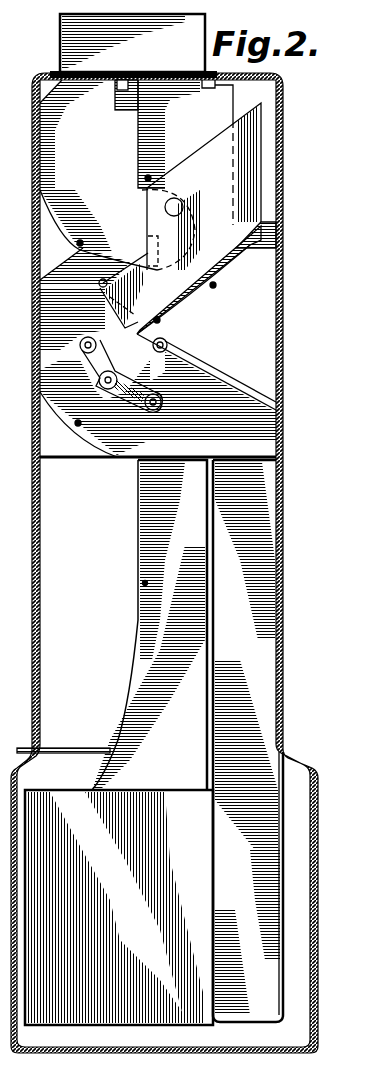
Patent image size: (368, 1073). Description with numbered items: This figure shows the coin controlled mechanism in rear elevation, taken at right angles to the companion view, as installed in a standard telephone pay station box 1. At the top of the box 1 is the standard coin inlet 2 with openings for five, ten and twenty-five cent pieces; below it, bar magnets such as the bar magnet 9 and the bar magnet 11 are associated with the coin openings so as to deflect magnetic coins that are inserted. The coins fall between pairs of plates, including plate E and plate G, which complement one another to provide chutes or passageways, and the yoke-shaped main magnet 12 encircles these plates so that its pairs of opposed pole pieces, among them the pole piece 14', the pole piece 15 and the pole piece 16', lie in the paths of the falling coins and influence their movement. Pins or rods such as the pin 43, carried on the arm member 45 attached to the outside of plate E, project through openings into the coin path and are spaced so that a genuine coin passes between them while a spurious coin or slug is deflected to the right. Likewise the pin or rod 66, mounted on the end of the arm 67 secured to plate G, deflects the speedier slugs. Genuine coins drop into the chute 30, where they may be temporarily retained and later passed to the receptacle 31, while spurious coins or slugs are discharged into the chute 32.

The telephone pay station box 1 is at (283, 393).
The coin inlet 2 is at (60, 45).
The bar magnet 9 is at (209, 88).
The bar magnet 11 is at (118, 90).
The main magnet 12 is at (250, 250).
The pole piece 14' is at (152, 230).
The pole piece 15 is at (147, 244).
The pole piece 16' is at (109, 290).
The chute 30 is at (145, 583).
The receptacle 31 is at (119, 907).
The chute 32 is at (248, 741).
The pin or rod 43 is at (168, 349).
The arm member 45 is at (198, 387).
The pin or rod 66 is at (80, 348).
The arm 67 is at (100, 352).
The plate E is at (68, 162).
The plate G is at (193, 142).